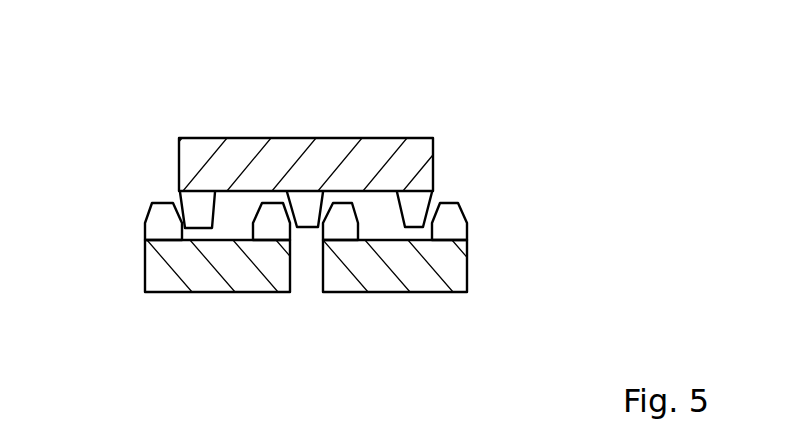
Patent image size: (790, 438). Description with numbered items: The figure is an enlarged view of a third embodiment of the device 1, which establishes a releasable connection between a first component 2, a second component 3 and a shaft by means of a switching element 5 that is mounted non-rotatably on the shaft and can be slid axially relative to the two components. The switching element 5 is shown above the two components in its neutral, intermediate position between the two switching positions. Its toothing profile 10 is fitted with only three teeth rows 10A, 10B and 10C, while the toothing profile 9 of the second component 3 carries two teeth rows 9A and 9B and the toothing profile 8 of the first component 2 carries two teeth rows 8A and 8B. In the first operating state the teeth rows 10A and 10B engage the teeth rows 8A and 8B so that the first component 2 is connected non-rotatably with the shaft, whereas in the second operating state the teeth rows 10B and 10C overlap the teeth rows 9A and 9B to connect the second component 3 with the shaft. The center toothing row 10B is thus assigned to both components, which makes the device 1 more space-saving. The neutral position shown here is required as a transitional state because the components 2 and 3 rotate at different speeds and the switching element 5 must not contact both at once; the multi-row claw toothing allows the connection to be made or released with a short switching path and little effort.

The device 1 is at (128, 131).
The first component 2 is at (458, 273).
The second component 3 is at (158, 277).
The switching element 5 is at (375, 155).
The toothing profile 8 is at (477, 229).
The teeth row 8A is at (351, 240).
The teeth row 8B is at (435, 240).
The toothing profile 9 is at (136, 226).
The teeth row 9A is at (176, 240).
The teeth row 9B is at (283, 240).
The toothing profile 10 is at (222, 208).
The teeth row 10A is at (420, 207).
The center toothing row 10B is at (303, 205).
The teeth row 10C is at (200, 207).